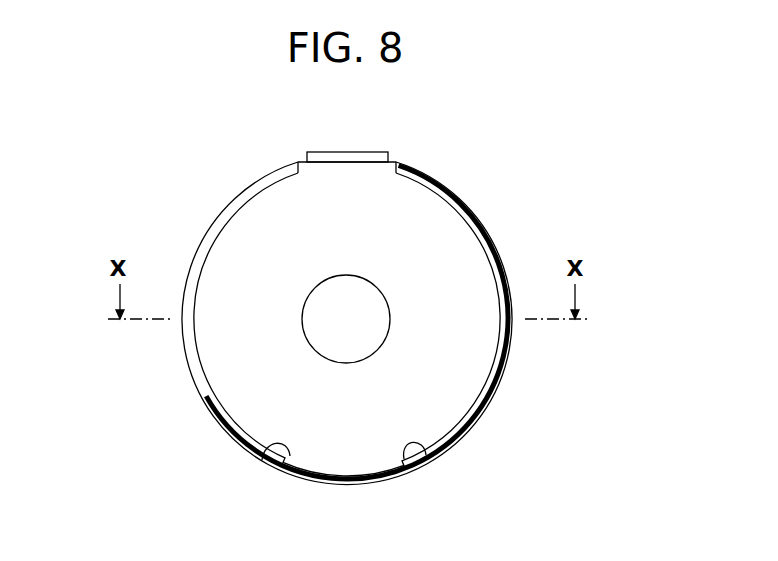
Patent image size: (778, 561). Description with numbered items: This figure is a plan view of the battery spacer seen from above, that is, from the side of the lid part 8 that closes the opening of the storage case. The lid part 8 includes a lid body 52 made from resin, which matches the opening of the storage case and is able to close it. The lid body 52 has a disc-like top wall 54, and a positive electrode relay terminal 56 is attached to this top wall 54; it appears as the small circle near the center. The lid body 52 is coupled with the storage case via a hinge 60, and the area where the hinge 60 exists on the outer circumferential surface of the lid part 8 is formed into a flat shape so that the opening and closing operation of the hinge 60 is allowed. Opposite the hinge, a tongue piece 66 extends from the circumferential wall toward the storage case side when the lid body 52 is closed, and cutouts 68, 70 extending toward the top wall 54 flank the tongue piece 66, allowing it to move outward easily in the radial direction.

The lid part 8 is at (199, 401).
The lid body 52 is at (452, 393).
The top wall 54 is at (258, 230).
The positive electrode relay terminal 56 is at (364, 302).
The hinge 60 is at (342, 152).
The tongue piece 66 is at (345, 484).
The cutout 68 is at (258, 451).
The cutout 70 is at (430, 454).